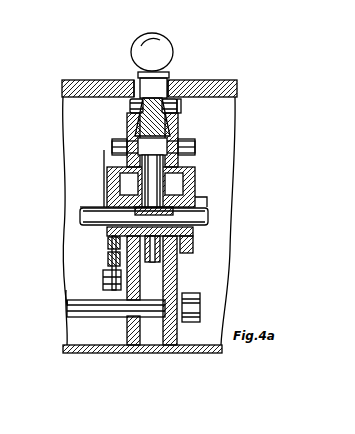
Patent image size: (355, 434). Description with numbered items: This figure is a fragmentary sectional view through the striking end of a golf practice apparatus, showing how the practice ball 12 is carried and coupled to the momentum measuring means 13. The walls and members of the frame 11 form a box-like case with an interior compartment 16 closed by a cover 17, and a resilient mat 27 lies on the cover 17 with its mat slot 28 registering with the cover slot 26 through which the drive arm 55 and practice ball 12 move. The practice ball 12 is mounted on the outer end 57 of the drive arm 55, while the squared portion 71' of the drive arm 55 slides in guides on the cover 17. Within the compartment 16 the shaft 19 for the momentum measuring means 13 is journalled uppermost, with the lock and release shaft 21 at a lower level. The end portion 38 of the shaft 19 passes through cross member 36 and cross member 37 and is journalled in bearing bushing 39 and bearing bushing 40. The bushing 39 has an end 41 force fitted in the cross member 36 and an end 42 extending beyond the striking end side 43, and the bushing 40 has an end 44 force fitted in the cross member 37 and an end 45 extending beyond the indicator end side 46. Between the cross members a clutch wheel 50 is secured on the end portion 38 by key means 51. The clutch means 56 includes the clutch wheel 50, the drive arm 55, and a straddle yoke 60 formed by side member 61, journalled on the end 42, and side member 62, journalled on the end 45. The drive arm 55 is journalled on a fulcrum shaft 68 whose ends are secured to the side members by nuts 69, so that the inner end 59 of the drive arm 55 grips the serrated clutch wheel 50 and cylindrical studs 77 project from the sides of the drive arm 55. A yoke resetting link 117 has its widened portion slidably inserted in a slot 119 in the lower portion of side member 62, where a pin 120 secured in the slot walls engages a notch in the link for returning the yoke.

The outer end 57 is at (137, 56).
The practice ball 12 is at (162, 47).
The squared portion 71' is at (171, 59).
The cover slot 26 is at (169, 86).
The mat 27 is at (220, 81).
The mat slot 28 is at (136, 77).
The cover 17 is at (236, 110).
The nuts 69 is at (104, 138).
The lock and release shaft 21 is at (65, 328).
The frame 11 is at (78, 355).
The cylindrical studs 77 is at (129, 106).
The drive arm 55 is at (181, 113).
The side member 62 is at (127, 124).
The side member 61 is at (178, 128).
The inner end 59 is at (183, 152).
The clutch means 56 is at (196, 163).
The fulcrum shaft 68 is at (152, 146).
The bearing bushing 40 is at (104, 190).
The straddle yoke 60 is at (197, 171).
The externally cylindrical end 41 is at (184, 190).
The clutch wheel 50 is at (152, 263).
The bearing bushing 39 is at (207, 198).
The momentum measuring means 13 is at (104, 150).
The interior compartment 16 is at (104, 163).
The shaft 19 is at (100, 207).
The end portion 38 is at (209, 216).
The key means 51 is at (144, 215).
The externally cylindrical end 45 is at (107, 231).
The slot 119 is at (108, 254).
The cylindrical end 44 is at (108, 242).
The pin 120 is at (108, 259).
The yoke resetting link 117 is at (108, 274).
The cross member 37 is at (128, 332).
The striking end side 43 is at (178, 276).
The externally cylindrical end 42 is at (193, 243).
The indicator end side 46 is at (78, 310).
The cross member 36 is at (178, 332).